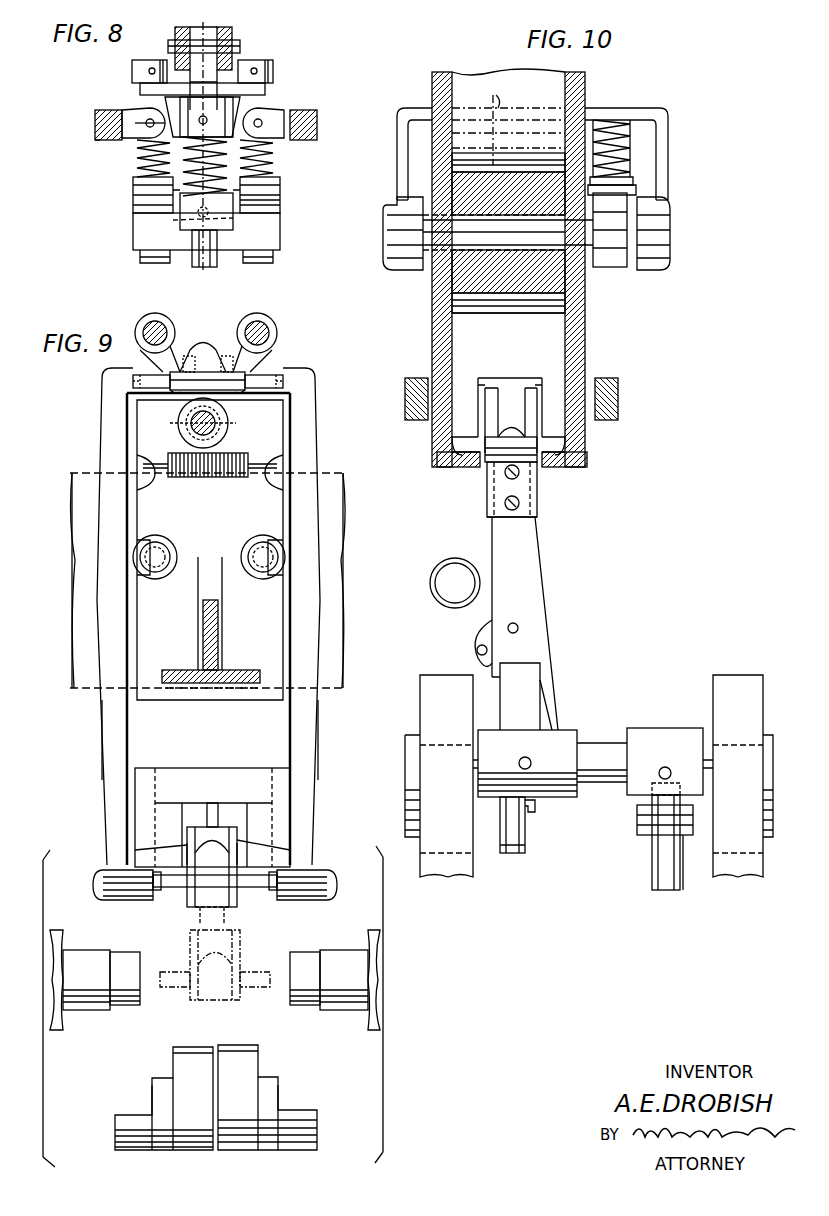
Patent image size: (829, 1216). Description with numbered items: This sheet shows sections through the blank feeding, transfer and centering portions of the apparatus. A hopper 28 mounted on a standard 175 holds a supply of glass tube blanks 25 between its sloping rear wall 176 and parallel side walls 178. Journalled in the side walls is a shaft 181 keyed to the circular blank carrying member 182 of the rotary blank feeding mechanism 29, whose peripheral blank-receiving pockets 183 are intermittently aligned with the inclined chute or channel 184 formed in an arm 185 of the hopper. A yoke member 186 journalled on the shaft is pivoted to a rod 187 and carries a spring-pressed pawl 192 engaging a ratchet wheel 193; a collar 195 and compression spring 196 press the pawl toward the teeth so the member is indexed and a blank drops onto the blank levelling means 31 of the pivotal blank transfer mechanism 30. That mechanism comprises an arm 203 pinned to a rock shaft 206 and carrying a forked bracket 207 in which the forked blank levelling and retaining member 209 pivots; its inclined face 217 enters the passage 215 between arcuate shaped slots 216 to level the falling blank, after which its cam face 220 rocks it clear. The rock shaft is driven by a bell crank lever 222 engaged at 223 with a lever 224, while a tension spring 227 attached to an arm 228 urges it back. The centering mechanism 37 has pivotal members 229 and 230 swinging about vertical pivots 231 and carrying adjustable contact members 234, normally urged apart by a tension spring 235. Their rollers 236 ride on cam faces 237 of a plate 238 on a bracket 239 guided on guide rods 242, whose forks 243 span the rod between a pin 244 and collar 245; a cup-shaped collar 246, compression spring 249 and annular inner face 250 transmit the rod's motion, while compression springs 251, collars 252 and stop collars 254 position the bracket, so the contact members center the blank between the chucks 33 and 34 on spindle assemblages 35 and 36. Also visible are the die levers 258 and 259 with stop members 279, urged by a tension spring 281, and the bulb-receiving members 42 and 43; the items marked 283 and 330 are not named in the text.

In FIG. 9, the blank 25 is at (237, 888).
In FIG. 10, the blank 25 is at (494, 104).
In FIG. 10, the hopper 28 is at (449, 64).
In FIG. 10, the rotary blank feeding mechanism 29 is at (538, 165).
In FIG. 10, the pivotal blank transfer mechanism 30 is at (552, 571).
In FIG. 9, the blank levelling means 31 is at (177, 846).
In FIG. 10, the blank levelling means 31 is at (541, 374).
In FIG. 9, the chuck 33 is at (142, 955).
In FIG. 9, the chuck 34 is at (292, 950).
In FIG. 9, the spindle assemblage 35 is at (107, 942).
In FIG. 9, the spindle assemblage 36 is at (338, 942).
In FIG. 8, the centering mechanism 37 is at (92, 144).
In FIG. 9, the centering mechanism 37 is at (328, 813).
In FIG. 9, the bulb-receiving member 42 is at (165, 1058).
In FIG. 9, the bulb-receiving member 43 is at (269, 1057).
In FIG. 9, the standard 175 is at (77, 590).
In FIG. 10, the rear wall 176 is at (508, 110).
In FIG. 9, the side walls 178 is at (143, 776).
In FIG. 10, the side walls 178 is at (437, 92).
In FIG. 10, the shaft 181 is at (475, 240).
In FIG. 10, the blank carrying member 182 is at (460, 186).
In FIG. 10, the blank-receiving pockets 183 is at (460, 165).
In FIG. 10, the inclined chute or channel 184 is at (572, 340).
In FIG. 9, the arm 185 is at (175, 770).
In FIG. 10, the arm 185 is at (440, 456).
In FIG. 10, the yoke member 186 is at (660, 125).
In FIG. 8, the rod 187 is at (215, 72).
In FIG. 9, the rod 187 is at (222, 423).
In FIG. 10, the spring-pressed pawl 192 is at (635, 165).
In FIG. 10, the ratchet wheel 193 is at (605, 265).
In FIG. 10, the collar 195 is at (634, 192).
In FIG. 10, the compression spring 196 is at (628, 182).
In FIG. 10, the arm 203 is at (543, 656).
In FIG. 10, the rock shaft 206 is at (605, 748).
In FIG. 9, the forked bracket 207 is at (224, 910).
In FIG. 10, the forked bracket 207 is at (500, 470).
In FIG. 9, the forked blank levelling and retaining member 209 is at (195, 895).
In FIG. 10, the forked blank levelling and retaining member 209 is at (530, 418).
In FIG. 9, the passage 215 is at (236, 808).
In FIG. 10, the passage 215 is at (500, 380).
In FIG. 9, the arcuate shaped slots 216 is at (110, 868).
In FIG. 10, the arcuate shaped slots 216 is at (452, 468).
In FIG. 9, the inclined face 217 is at (212, 855).
In FIG. 9, the cam face 220 is at (212, 803).
In FIG. 10, the bell crank lever 222 is at (652, 855).
In FIG. 10, the operative engagement 223 is at (645, 822).
In FIG. 10, the lever 224 is at (683, 845).
In FIG. 10, the tension spring 227 is at (528, 808).
In FIG. 10, the arm 228 is at (510, 855).
In FIG. 8, the pivotal member 229 is at (96, 128).
In FIG. 9, the pivotal member 229 is at (108, 739).
In FIG. 10, the pivotal member 229 is at (410, 404).
In FIG. 8, the pivotal member 230 is at (317, 122).
In FIG. 9, the pivotal member 230 is at (318, 740).
In FIG. 10, the pivotal member 230 is at (618, 395).
In FIG. 9, the vertical pivots 231 is at (262, 556).
In FIG. 9, the adjustable contact member 234 is at (158, 890).
In FIG. 9, the tension spring 235 is at (213, 478).
In FIG. 8, the rollers 236 is at (143, 112).
In FIG. 9, the rollers 236 is at (132, 381).
In FIG. 8, the cam faces 237 is at (140, 160).
In FIG. 9, the cam faces 237 is at (247, 373).
In FIG. 8, the plate 238 is at (240, 100).
In FIG. 9, the plate 238 is at (207, 371).
In FIG. 8, the bracket 239 is at (96, 115).
In FIG. 9, the bracket 239 is at (210, 342).
In FIG. 8, the guide rods 242 is at (245, 205).
In FIG. 9, the guide rods 242 is at (150, 318).
In FIG. 8, the forks 243 is at (217, 262).
In FIG. 9, the forks 243 is at (182, 428).
In FIG. 8, the pin 244 is at (250, 220).
In FIG. 8, the collar 245 is at (145, 90).
In FIG. 8, the cup-shaped collar 246 is at (180, 208).
In FIG. 8, the compression spring 249 is at (233, 195).
In FIG. 8, the annular inner face 250 is at (180, 222).
In FIG. 8, the compression springs 251 is at (228, 172).
In FIG. 8, the collars 252 is at (134, 198).
In FIG. 8, the collars 254 is at (140, 70).
In FIG. 9, the lever 258 is at (185, 1098).
In FIG. 9, the lever 259 is at (250, 1098).
In FIG. 9, the stop member 279 is at (125, 1135).
In FIG. 10, the tension spring 281 is at (436, 575).
In FIG. 10, the lug 283 is at (477, 650).
In FIG. 10, the block 330 is at (547, 510).